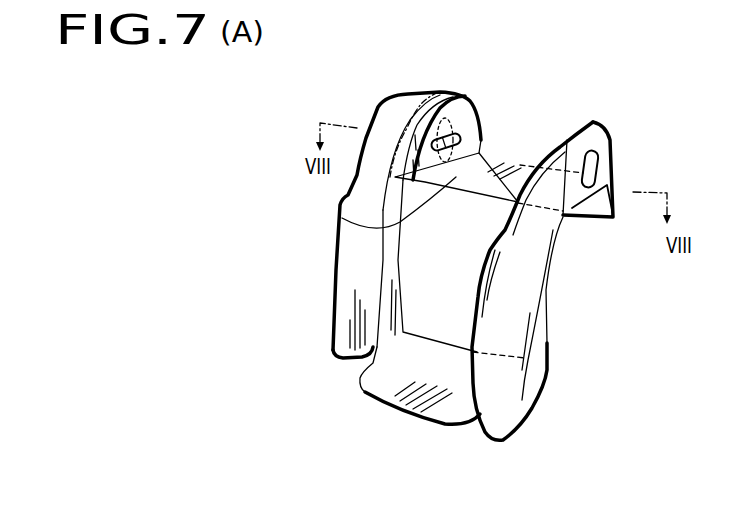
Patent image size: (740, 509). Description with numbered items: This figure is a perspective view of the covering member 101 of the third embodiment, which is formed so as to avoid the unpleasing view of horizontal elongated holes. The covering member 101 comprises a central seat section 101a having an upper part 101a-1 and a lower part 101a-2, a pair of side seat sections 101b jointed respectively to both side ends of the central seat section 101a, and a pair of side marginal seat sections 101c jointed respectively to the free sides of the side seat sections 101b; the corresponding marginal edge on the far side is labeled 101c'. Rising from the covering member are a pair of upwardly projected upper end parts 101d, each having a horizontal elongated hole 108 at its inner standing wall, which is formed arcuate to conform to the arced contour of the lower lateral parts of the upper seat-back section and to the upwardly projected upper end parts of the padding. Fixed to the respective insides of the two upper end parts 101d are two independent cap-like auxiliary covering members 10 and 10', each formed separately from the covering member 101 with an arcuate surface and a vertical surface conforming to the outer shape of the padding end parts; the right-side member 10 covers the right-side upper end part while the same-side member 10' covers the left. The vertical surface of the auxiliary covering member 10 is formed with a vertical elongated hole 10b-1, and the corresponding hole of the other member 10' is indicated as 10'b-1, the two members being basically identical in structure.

The covering member 101 is at (556, 389).
The central seat section 101a is at (461, 281).
The upper part 101a-1 is at (342, 218).
The lower part 101a-2 is at (393, 381).
The side seat section 101b is at (383, 268).
The side marginal seat section 101c is at (442, 266).
The upper curved flange edge 101c' is at (469, 139).
The upwardly projected upper end part 101d is at (447, 92).
The horizontal elongated hole 108 is at (470, 141).
The auxiliary covering member 10 is at (590, 169).
The auxiliary covering member 10' is at (414, 113).
The vertical elongated hole 10b-1 is at (572, 208).
The hidden bracket tab 10'b-1 is at (485, 117).